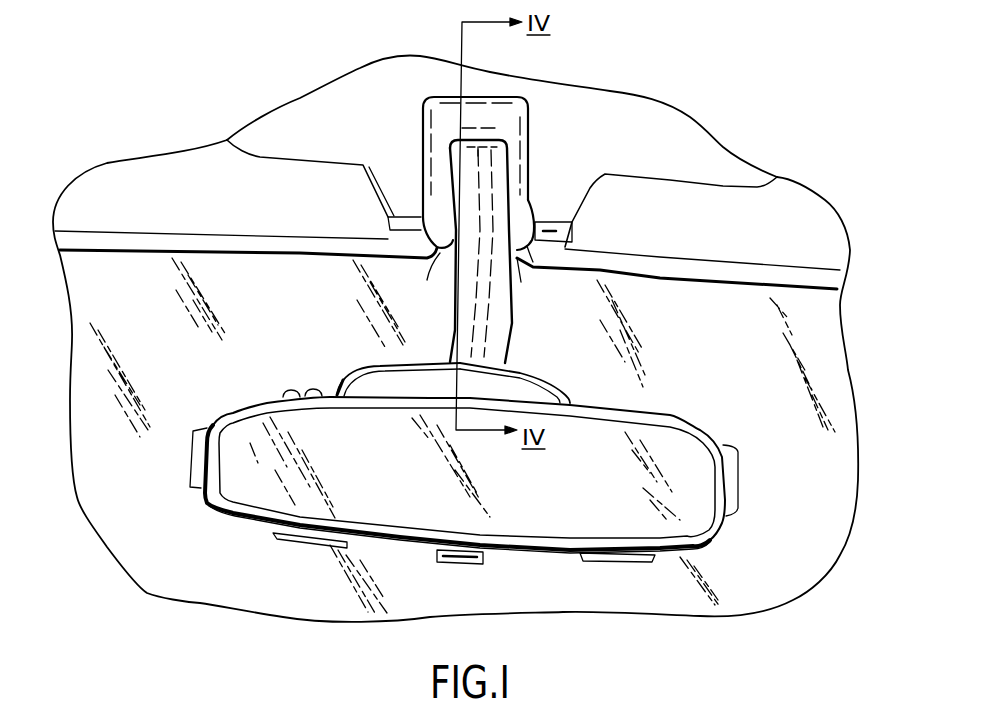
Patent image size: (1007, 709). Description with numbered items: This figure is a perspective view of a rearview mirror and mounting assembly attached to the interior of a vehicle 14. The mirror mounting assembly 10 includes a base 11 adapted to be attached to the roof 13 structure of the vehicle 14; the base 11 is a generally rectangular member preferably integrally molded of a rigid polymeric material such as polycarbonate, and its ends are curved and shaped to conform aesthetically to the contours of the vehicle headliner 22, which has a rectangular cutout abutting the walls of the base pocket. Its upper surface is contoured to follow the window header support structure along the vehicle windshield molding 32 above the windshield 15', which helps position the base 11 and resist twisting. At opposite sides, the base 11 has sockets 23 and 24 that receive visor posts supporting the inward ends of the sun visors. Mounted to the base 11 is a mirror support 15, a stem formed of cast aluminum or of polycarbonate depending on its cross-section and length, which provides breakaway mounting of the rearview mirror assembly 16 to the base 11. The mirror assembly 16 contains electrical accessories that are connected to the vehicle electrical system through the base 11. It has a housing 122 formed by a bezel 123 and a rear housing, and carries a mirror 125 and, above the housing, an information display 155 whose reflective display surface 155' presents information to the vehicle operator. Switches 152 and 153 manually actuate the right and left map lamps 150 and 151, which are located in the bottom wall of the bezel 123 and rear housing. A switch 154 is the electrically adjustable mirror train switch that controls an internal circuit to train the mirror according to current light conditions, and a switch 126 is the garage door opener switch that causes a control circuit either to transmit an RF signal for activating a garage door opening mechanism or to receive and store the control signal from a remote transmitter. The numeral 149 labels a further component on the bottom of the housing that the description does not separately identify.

The mirror mounting assembly 10 is at (598, 140).
The base 11 is at (513, 127).
The roof 13 is at (690, 112).
The vehicle 14 is at (826, 170).
The mirror support 15 is at (521, 251).
The windshield 15' is at (462, 435).
The rearview mirror assembly 16 is at (727, 543).
The vehicle headliner 22 is at (383, 65).
The socket 23 is at (438, 263).
The socket 24 is at (517, 268).
The vehicle windshield molding 32 is at (820, 290).
The housing 122 is at (197, 503).
The bezel 123 is at (243, 527).
The mirror 125 is at (553, 530).
The garage door opener switch 126 is at (300, 393).
The switch button 149 is at (457, 567).
The right map lamp 150 is at (303, 545).
The left map lamp 151 is at (607, 561).
The switch 152 is at (193, 445).
The switch 153 is at (738, 473).
The electrically adjustable mirror train switch 154 is at (283, 392).
The information display 155 is at (380, 350).
The reflective display surface 155' is at (568, 383).